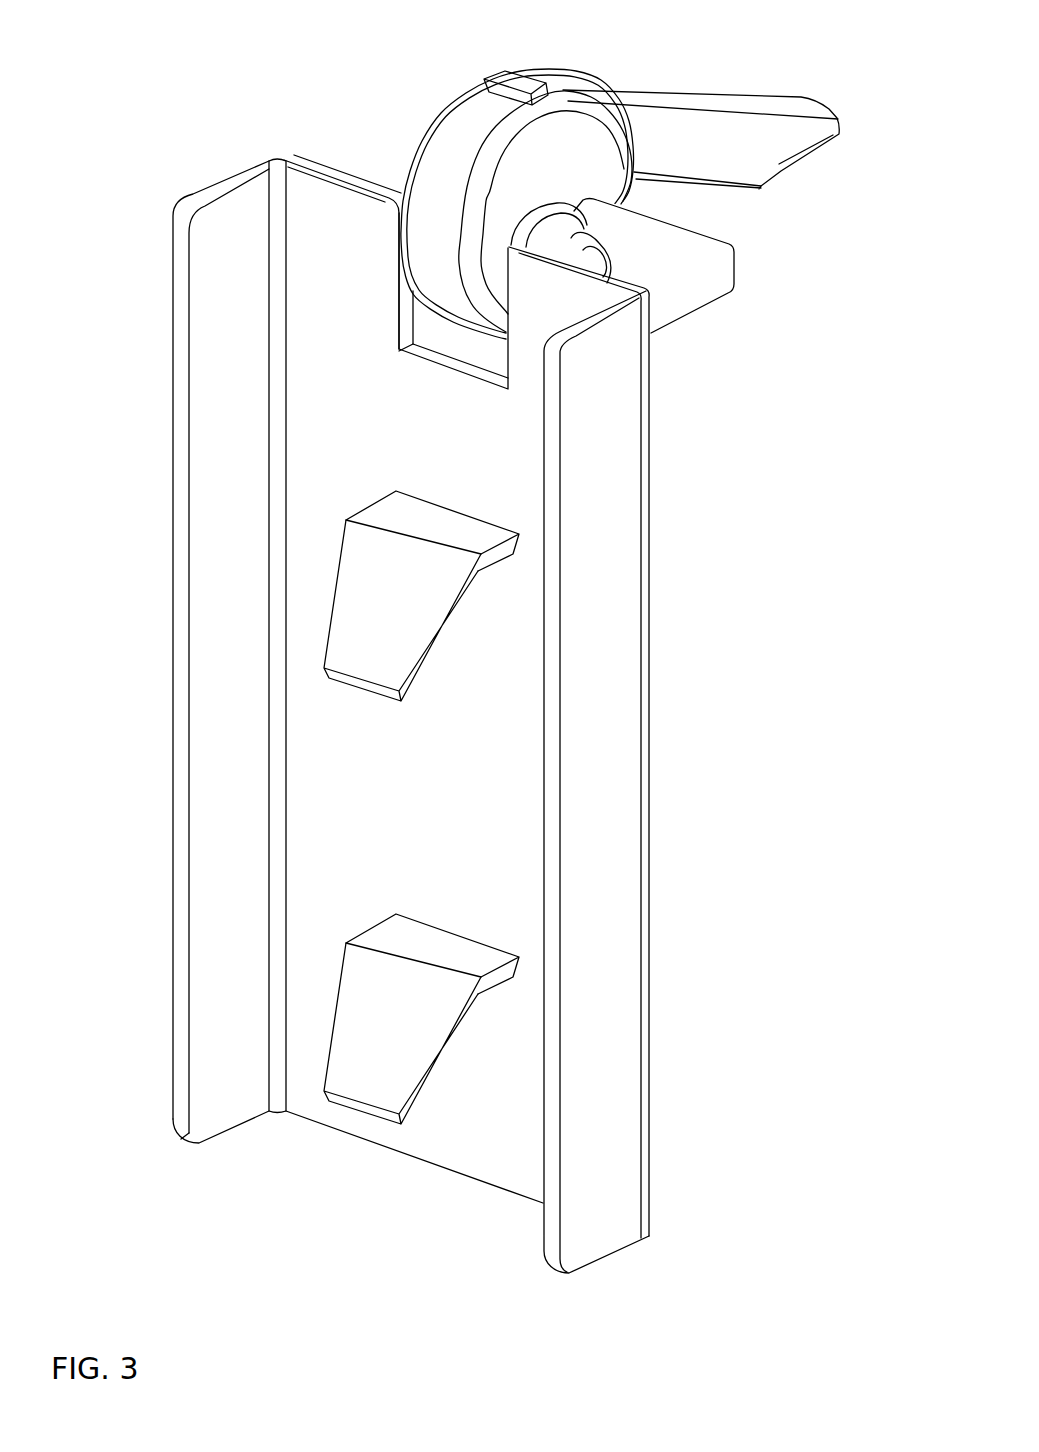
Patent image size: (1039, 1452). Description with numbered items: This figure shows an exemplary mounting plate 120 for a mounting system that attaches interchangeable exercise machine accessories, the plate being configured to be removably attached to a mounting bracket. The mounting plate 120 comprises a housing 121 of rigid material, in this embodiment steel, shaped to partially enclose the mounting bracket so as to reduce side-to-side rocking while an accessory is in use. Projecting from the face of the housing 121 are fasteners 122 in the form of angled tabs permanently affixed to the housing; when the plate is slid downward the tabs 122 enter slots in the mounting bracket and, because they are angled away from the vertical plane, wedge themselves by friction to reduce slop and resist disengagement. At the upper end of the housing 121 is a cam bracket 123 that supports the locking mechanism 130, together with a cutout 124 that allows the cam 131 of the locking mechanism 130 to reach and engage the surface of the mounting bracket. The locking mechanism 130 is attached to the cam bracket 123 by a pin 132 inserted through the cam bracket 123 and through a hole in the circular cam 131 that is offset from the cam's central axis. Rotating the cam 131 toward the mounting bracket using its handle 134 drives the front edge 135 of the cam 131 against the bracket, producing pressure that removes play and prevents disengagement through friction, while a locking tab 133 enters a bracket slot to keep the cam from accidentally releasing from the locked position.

The mounting plate 120 is at (810, 1112).
The housing 121 is at (215, 597).
The fasteners 122 is at (387, 615).
The cam bracket 123 is at (683, 295).
The cutout 124 is at (453, 343).
The locking mechanism 130 is at (307, 72).
The cam 131 is at (563, 155).
The pin 132 is at (610, 258).
The locking tab 133 is at (506, 76).
The handle 134 is at (700, 142).
The front edge 135 is at (440, 160).